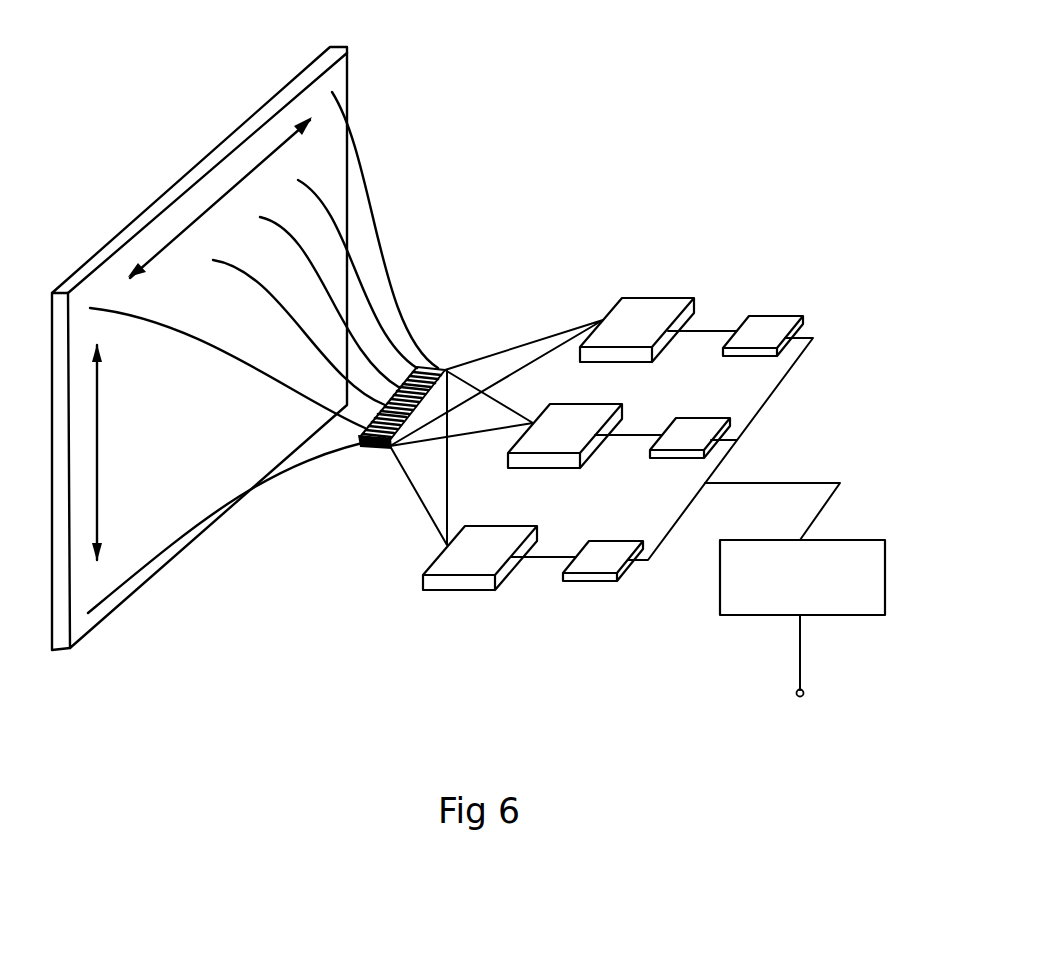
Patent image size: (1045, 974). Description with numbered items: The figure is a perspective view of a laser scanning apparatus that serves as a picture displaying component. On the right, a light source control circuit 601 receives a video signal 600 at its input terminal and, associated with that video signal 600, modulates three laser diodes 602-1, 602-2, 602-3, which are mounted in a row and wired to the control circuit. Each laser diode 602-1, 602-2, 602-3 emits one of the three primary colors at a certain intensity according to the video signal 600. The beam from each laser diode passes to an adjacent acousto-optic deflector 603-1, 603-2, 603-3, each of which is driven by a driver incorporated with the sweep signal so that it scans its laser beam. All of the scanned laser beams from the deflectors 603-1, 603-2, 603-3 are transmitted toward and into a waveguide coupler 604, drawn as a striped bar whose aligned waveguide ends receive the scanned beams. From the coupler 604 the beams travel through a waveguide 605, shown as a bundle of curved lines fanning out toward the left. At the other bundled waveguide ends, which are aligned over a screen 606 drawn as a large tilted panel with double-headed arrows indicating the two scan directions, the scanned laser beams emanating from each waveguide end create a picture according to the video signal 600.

The video signal 600 is at (803, 676).
The light source control circuit 601 is at (870, 597).
The laser diode 602-1 is at (782, 320).
The laser diode 602-2 is at (710, 423).
The laser diode 602-3 is at (580, 575).
The acousto-optic deflector (AOD) 603-1 is at (632, 305).
The acousto-optic deflector (AOD) 603-2 is at (552, 447).
The acousto-optic deflector (AOD) 603-3 is at (482, 580).
The waveguide coupler 604 is at (430, 365).
The waveguide 605 is at (380, 237).
The screen 606 is at (297, 90).